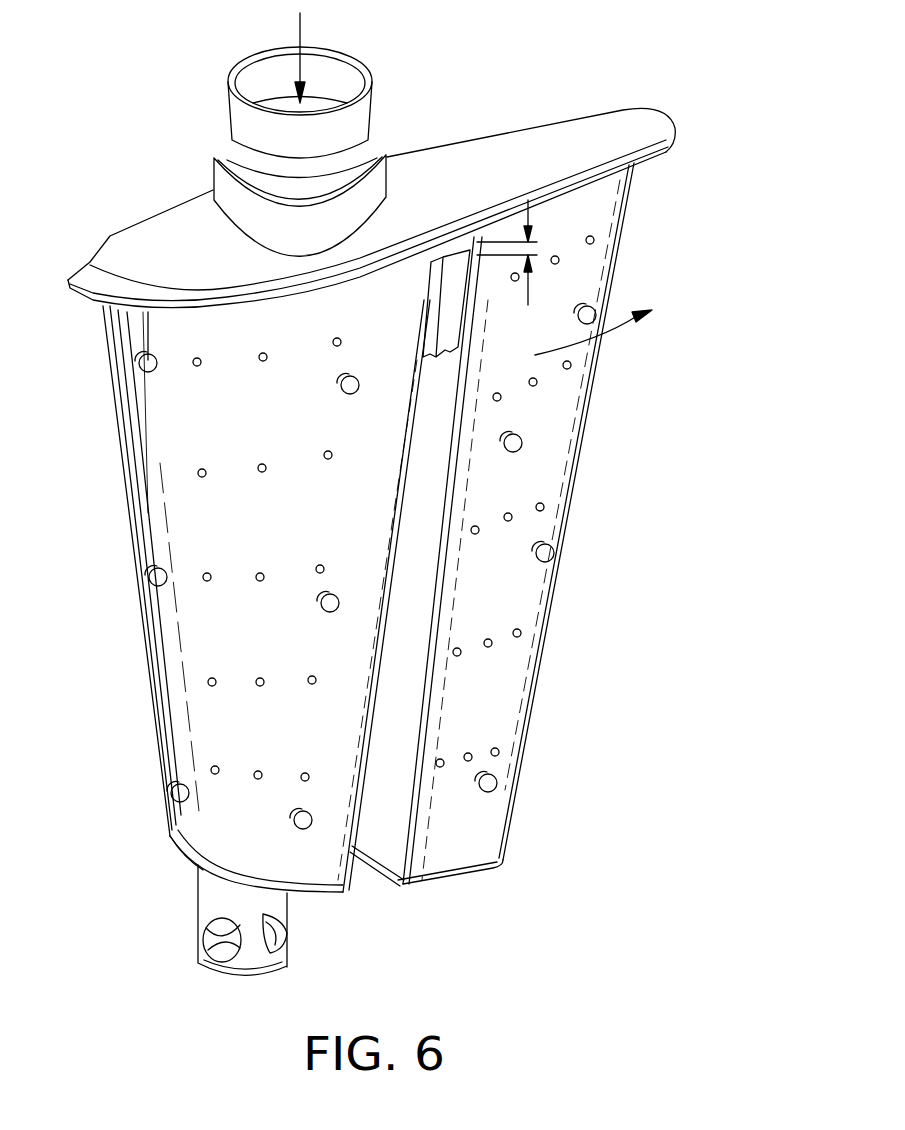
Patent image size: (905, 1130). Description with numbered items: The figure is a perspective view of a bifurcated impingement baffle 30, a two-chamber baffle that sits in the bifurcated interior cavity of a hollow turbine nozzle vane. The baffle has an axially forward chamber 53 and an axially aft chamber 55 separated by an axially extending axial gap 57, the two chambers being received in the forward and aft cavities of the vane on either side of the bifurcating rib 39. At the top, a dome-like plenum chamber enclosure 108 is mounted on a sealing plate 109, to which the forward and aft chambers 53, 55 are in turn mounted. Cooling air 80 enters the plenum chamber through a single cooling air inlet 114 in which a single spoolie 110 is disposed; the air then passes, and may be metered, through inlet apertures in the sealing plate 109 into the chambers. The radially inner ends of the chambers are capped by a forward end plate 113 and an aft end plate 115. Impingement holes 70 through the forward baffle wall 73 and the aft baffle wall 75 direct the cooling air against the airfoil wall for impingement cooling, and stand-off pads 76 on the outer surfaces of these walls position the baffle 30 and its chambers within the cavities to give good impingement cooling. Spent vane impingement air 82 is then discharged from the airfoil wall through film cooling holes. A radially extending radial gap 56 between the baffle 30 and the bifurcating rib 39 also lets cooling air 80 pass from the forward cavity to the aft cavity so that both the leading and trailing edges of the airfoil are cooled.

The bifurcated impingement baffle 30 is at (117, 953).
The bifurcating rib 39 is at (447, 337).
The forward chamber 53 is at (162, 688).
The aft chamber 55 is at (530, 660).
The radial gap 56 is at (530, 288).
The axial gap 57 is at (398, 678).
The impingement holes 70 is at (207, 580).
The forward baffle wall 73 is at (182, 490).
The aft baffle wall 75 is at (550, 413).
The stand-off pads 76 is at (552, 556).
The cooling air 80 is at (303, 30).
The spent vane impingement air 82 is at (618, 327).
The plenum chamber enclosure 108 is at (508, 147).
The sealing plate 109 is at (676, 127).
The spoolie 110 is at (367, 110).
The forward end plate 113 is at (183, 853).
The cooling air inlet 114 is at (373, 213).
The aft end plate 115 is at (467, 873).